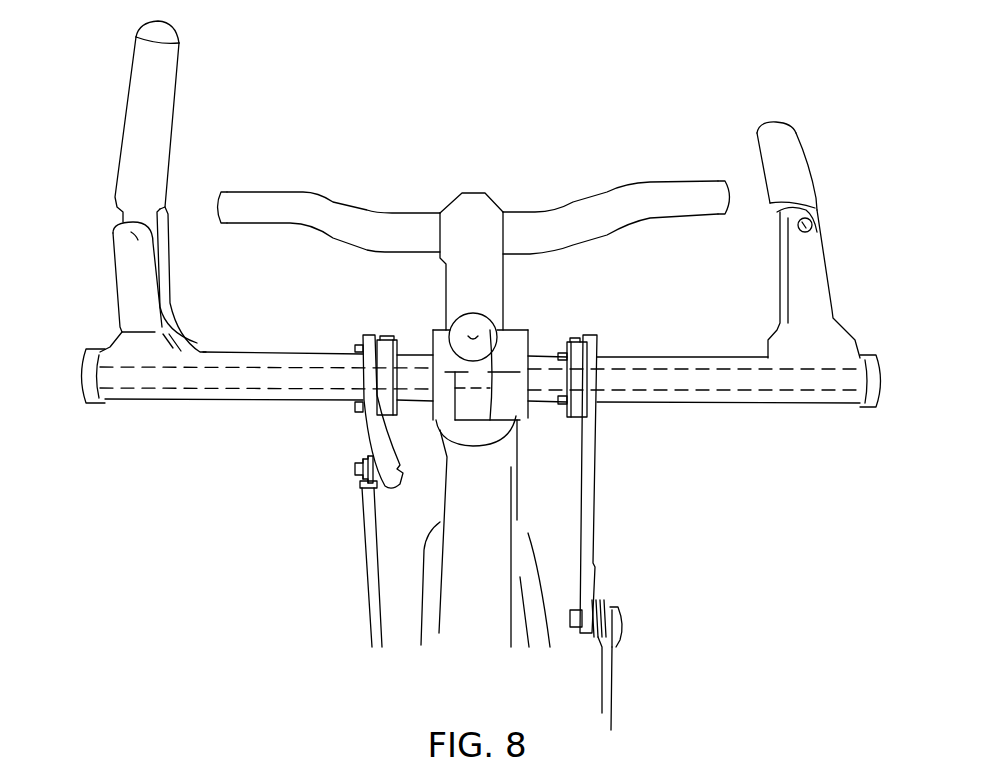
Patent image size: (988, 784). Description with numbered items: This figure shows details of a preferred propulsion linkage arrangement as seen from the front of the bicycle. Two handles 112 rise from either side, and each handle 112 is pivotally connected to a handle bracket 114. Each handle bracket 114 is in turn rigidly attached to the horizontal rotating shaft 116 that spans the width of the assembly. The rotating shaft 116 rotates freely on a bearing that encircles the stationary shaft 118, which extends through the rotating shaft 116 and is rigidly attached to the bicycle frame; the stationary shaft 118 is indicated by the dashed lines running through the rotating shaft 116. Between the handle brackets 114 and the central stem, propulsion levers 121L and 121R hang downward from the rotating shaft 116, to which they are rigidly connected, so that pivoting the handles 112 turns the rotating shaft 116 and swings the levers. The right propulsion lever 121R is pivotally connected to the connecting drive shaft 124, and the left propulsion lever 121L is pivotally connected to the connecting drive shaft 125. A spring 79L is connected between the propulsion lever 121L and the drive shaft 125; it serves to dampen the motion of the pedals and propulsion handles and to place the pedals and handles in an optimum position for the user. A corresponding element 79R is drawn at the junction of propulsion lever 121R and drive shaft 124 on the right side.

The handle 112 is at (175, 126).
The handle bracket 114 is at (113, 287).
The rotating shaft 116 is at (275, 350).
The stationary shaft 118 is at (310, 363).
The propulsion lever 121L is at (365, 430).
The propulsion lever 121R is at (598, 442).
The spring 79L is at (358, 473).
The right cable anchor 79R is at (607, 605).
The connecting drive shaft 125 is at (365, 573).
The connecting drive shaft 124 is at (612, 677).